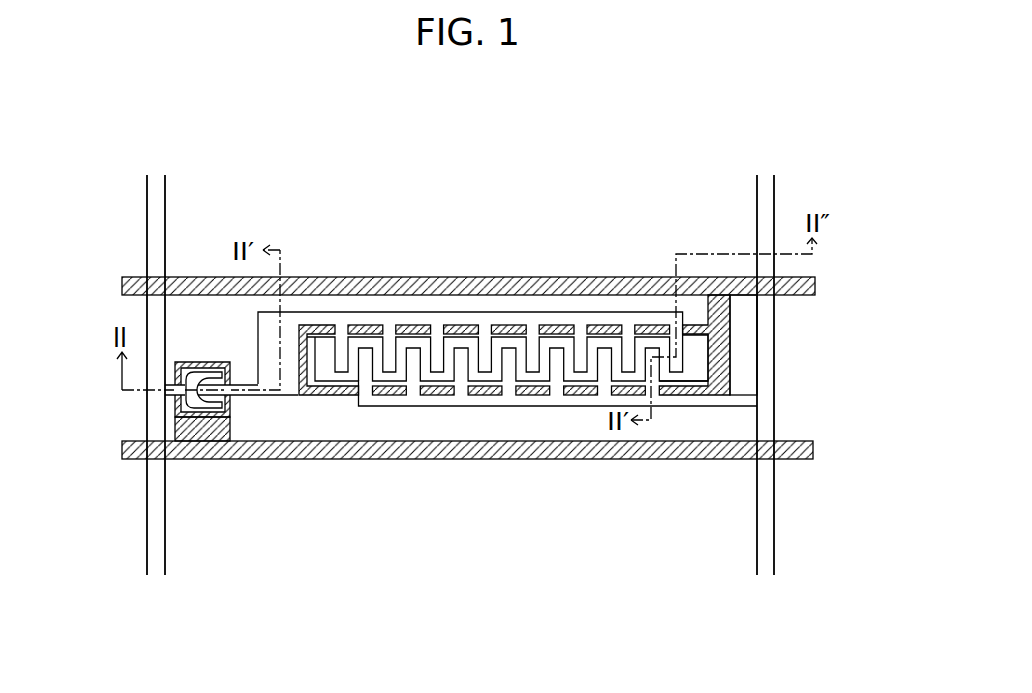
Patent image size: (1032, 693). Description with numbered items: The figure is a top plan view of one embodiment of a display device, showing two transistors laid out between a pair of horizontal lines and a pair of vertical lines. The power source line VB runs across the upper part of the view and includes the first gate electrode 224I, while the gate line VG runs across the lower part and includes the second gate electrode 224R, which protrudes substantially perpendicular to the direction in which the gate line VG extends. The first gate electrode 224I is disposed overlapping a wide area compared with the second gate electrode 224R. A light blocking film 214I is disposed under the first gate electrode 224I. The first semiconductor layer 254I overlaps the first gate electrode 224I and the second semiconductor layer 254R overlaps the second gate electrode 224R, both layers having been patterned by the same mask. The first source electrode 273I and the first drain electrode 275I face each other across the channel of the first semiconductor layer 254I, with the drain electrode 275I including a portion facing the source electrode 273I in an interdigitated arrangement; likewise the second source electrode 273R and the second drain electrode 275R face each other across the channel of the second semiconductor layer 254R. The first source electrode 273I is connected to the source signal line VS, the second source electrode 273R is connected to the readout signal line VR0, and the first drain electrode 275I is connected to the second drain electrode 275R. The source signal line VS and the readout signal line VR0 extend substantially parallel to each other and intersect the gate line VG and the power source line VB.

The second drain electrode 275R is at (247, 382).
The first drain electrode 275I is at (602, 320).
The second source electrode 273R is at (188, 417).
The first source electrode 273I is at (578, 400).
The second gate electrode 224R is at (230, 407).
The first gate electrode 224I is at (727, 340).
The second semiconductor layer 254R is at (212, 417).
The first semiconductor layer 254I is at (700, 373).
The light blocking film 214I is at (727, 363).
The readout signal line VR0 is at (147, 213).
The power source line VB is at (415, 277).
The source signal line VS is at (774, 186).
The gate line VG is at (420, 460).